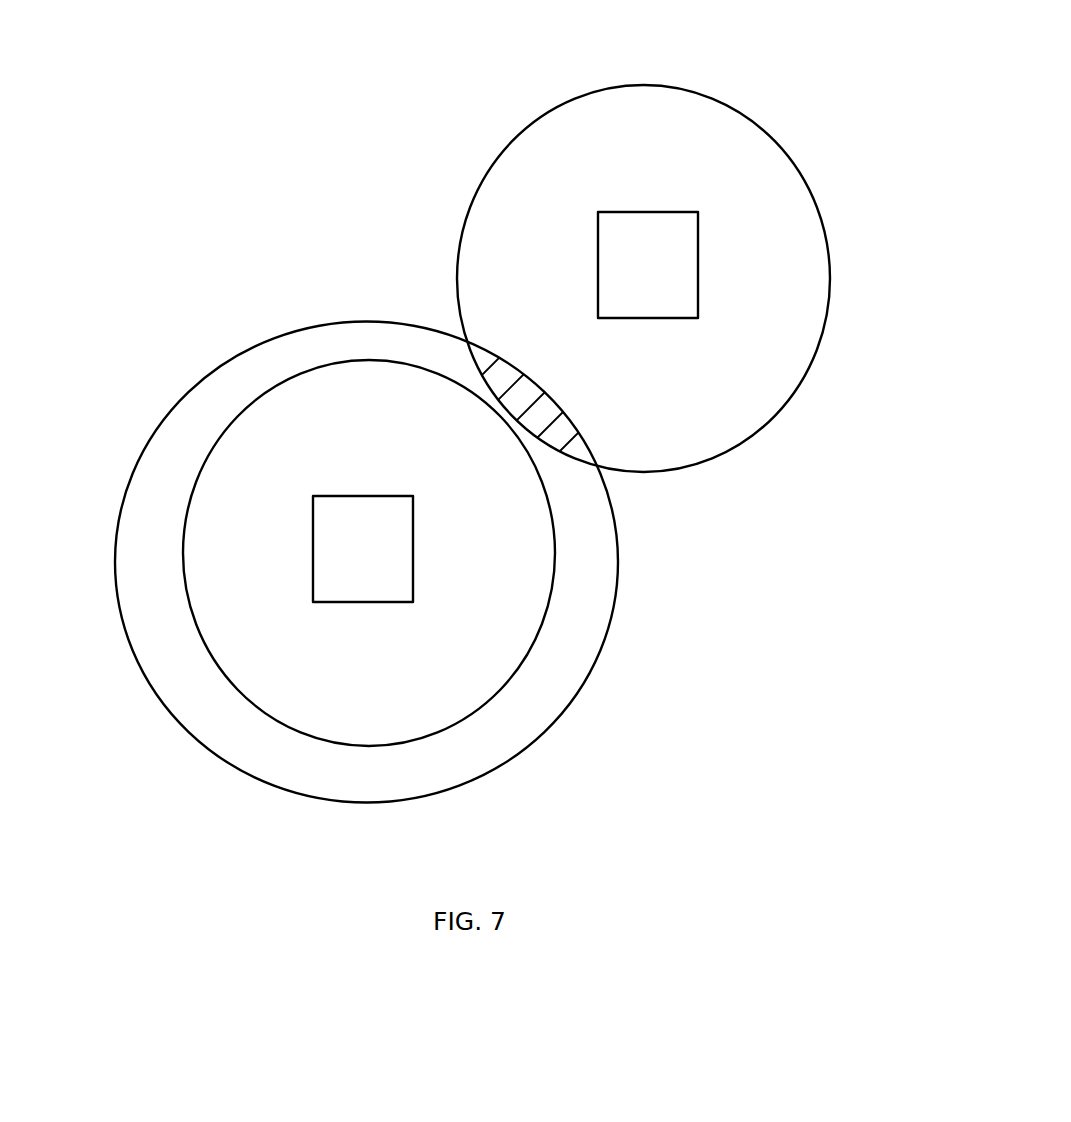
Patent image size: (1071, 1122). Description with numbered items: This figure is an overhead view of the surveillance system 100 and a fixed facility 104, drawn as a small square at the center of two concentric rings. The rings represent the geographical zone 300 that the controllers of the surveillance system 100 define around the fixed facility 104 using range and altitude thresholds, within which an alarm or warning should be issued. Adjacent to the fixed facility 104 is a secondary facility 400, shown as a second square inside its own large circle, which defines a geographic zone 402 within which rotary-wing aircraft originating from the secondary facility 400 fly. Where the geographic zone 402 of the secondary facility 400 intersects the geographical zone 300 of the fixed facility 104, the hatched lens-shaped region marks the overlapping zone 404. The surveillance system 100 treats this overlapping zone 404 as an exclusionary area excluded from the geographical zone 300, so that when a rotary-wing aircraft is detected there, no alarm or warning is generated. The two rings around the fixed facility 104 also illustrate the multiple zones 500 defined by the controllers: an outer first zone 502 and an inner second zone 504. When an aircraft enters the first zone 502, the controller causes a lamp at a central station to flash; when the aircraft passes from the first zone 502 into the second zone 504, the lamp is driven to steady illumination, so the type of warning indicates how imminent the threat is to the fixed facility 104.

The surveillance system 100 is at (221, 548).
The fixed facility 104 is at (384, 563).
The geographical zone 300 is at (176, 286).
The secondary facility 400 is at (670, 277).
The geographic zone 402 is at (643, 85).
The overlapping zone 404 is at (502, 377).
The multiple zones 500 is at (610, 733).
The first zone 502 is at (618, 563).
The second zone 504 is at (523, 663).